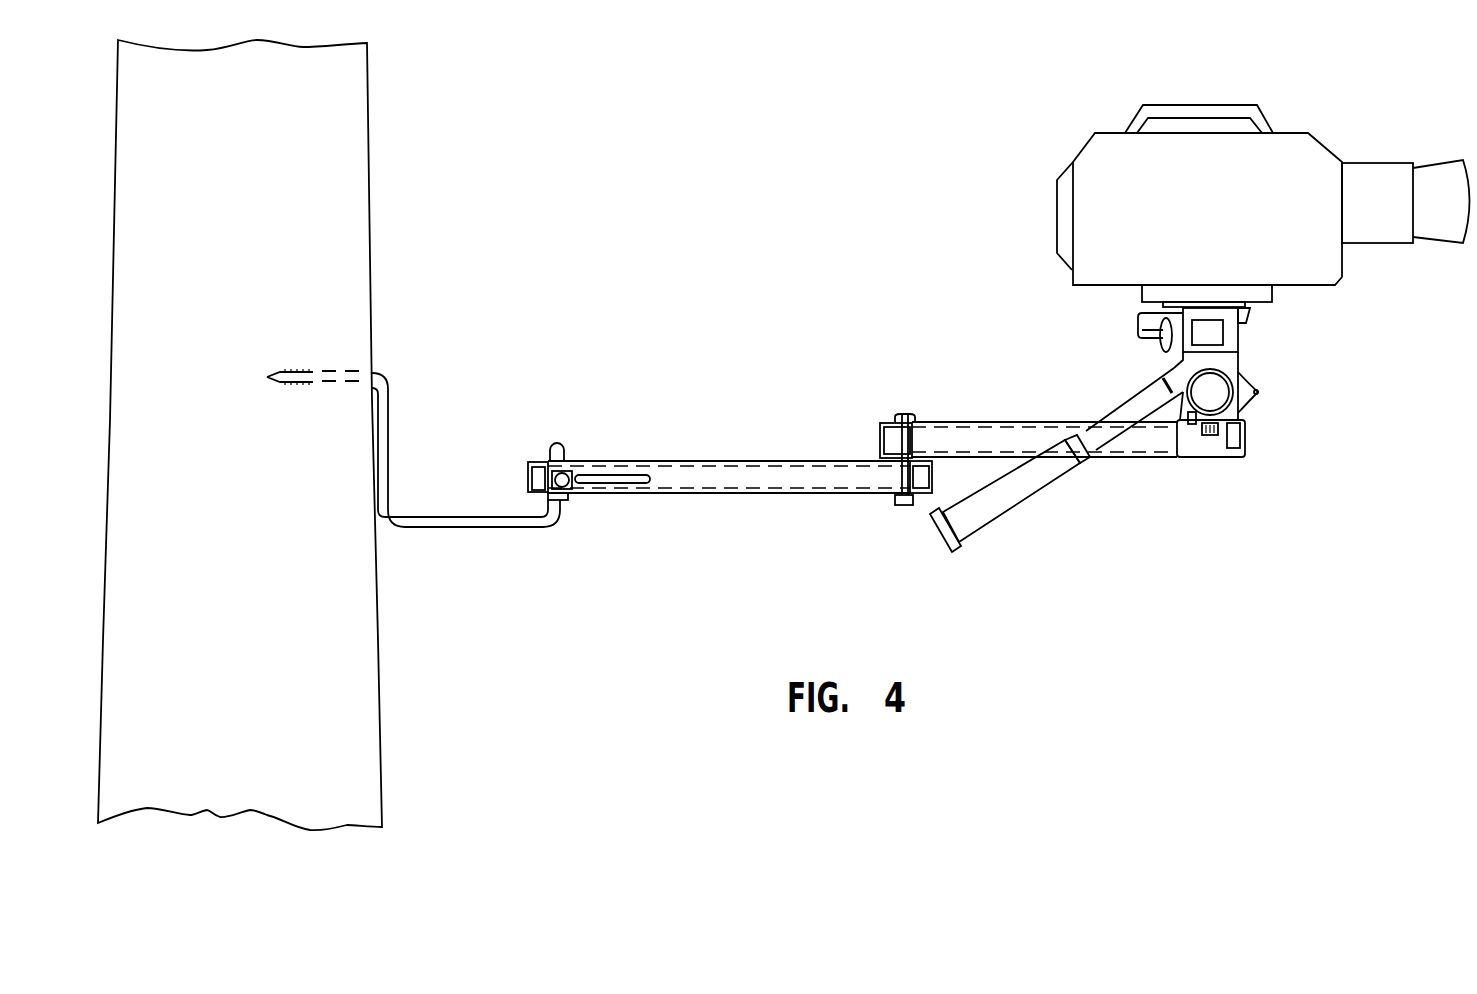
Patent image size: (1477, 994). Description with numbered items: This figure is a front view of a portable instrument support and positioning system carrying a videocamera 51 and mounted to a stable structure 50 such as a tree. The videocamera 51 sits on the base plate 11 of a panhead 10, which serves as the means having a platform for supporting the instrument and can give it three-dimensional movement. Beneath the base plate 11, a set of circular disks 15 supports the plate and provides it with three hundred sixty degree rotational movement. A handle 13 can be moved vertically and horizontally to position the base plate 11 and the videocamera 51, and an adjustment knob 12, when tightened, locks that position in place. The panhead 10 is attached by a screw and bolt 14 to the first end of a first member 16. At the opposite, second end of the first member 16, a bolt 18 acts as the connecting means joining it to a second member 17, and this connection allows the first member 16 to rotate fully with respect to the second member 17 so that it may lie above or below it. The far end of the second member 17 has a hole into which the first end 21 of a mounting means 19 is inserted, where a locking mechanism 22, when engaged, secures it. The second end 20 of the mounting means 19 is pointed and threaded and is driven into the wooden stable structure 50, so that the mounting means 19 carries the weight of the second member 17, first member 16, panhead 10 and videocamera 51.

The panhead 10 is at (1356, 345).
The base plate 11 is at (1240, 305).
The adjustment knob 12 is at (1250, 390).
The handle 13 is at (1007, 498).
The screw and bolt 14 is at (1208, 440).
The set of circular disks 15 is at (1152, 401).
The first member 16 is at (980, 422).
The second member 17 is at (718, 460).
The bolt 18 is at (903, 508).
The mounting means 19 is at (449, 500).
The second end 20 is at (278, 362).
The first end 21 is at (562, 445).
The locking mechanism 22 is at (625, 483).
The stable structure 50 is at (372, 120).
The videocamera 51 is at (1070, 130).